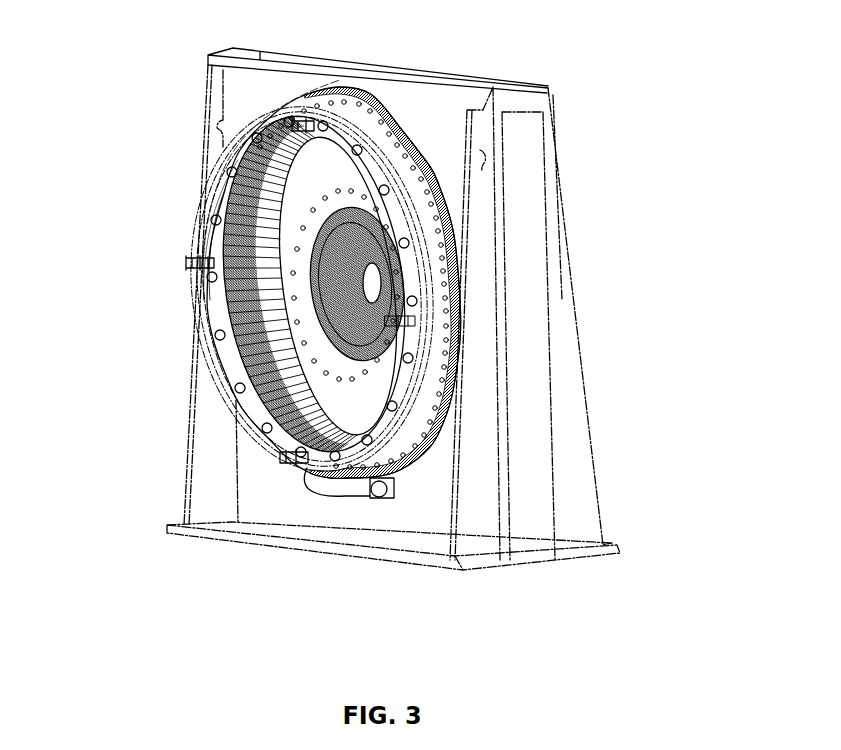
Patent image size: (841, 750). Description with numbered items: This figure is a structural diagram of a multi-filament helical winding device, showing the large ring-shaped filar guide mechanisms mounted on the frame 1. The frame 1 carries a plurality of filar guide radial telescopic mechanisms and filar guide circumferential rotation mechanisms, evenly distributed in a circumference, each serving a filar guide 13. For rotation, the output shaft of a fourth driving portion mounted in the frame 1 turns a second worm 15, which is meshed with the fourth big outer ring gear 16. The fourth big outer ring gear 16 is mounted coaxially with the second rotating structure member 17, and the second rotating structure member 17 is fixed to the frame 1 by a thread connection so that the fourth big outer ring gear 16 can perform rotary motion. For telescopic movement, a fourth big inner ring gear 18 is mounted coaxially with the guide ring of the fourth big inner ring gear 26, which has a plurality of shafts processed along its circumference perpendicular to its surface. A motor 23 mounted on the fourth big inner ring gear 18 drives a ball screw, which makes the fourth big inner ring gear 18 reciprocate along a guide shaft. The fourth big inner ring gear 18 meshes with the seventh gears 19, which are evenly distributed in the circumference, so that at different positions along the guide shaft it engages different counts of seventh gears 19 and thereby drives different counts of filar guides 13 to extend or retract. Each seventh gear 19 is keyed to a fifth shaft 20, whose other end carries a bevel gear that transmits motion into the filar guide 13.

The frame 1 is at (458, 114).
The filar guide 13 is at (365, 317).
The second worm 15 is at (394, 497).
The fourth big outer ring gear 16 is at (438, 195).
The second rotating structure member 17 is at (438, 165).
The fourth big inner ring gear 18 is at (430, 257).
The seventh gear 19 is at (293, 338).
The fifth shaft 20 is at (262, 402).
The motor 23 is at (183, 263).
The guide ring of the fourth big inner ring gear 26 is at (218, 210).